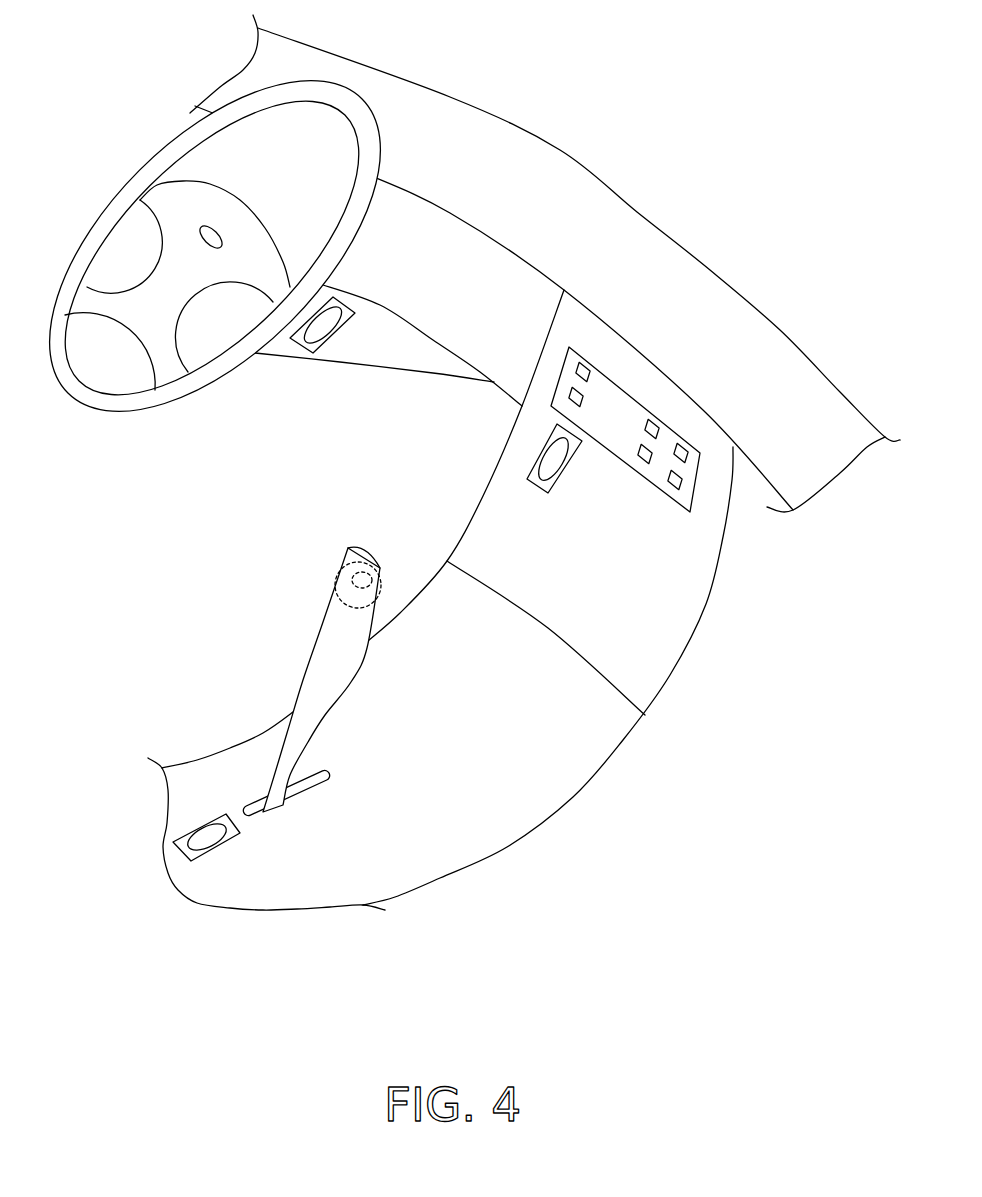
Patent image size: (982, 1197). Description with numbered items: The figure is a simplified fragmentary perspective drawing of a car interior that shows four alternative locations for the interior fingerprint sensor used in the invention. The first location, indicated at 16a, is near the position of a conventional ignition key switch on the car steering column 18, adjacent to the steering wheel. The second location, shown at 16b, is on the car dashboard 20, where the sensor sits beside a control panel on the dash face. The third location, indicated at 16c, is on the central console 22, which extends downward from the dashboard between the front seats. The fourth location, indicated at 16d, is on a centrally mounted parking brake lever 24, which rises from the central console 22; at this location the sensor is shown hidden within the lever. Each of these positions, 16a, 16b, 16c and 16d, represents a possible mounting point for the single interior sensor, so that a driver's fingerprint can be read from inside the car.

The interior sensor 16a is at (296, 343).
The interior sensor 16b is at (553, 493).
The interior sensor 16c is at (193, 861).
The interior sensor 16d is at (330, 615).
The car steering column 18 is at (404, 361).
The car dashboard 20 is at (591, 338).
The central console 22 is at (313, 867).
The parking brake lever 24 is at (336, 663).